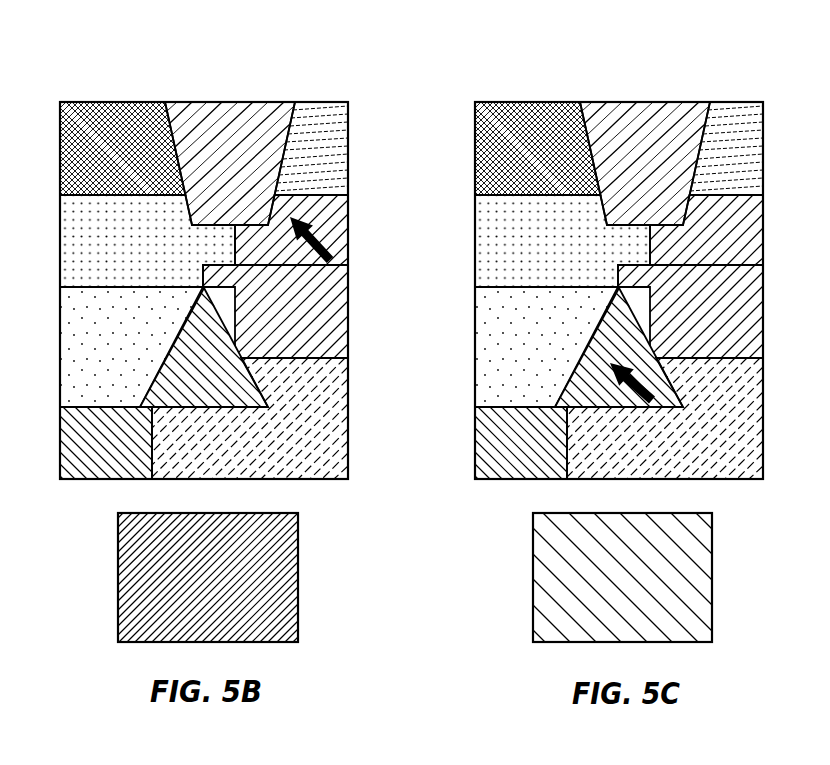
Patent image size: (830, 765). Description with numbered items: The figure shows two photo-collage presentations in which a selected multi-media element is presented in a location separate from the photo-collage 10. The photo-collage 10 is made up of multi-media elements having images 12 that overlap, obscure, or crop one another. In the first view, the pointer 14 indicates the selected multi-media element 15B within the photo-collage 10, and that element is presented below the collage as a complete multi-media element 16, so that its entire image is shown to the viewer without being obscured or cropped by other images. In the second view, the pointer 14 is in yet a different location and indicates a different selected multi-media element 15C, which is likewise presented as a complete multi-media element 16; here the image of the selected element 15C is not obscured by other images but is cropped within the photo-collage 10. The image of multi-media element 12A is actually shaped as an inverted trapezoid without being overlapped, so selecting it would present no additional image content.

In FIG. 5B, the photo-collage 10 is at (247, 86).
In FIG. 5C, the photo-collage 10 is at (655, 86).
In FIG. 5B, the images 12 is at (330, 102).
In FIG. 5C, the images 12 is at (750, 102).
In FIG. 5C, the multi-media element 12A is at (682, 102).
In FIG. 5B, the pointer 14 is at (348, 215).
In FIG. 5C, the pointer 14 is at (648, 388).
In FIG. 5B, the selected multi-media element 15B is at (348, 238).
In FIG. 5C, the selected multi-media element 15C is at (604, 357).
In FIG. 5B, the complete multi-media element 16 is at (298, 608).
In FIG. 5C, the complete multi-media element 16 is at (712, 602).